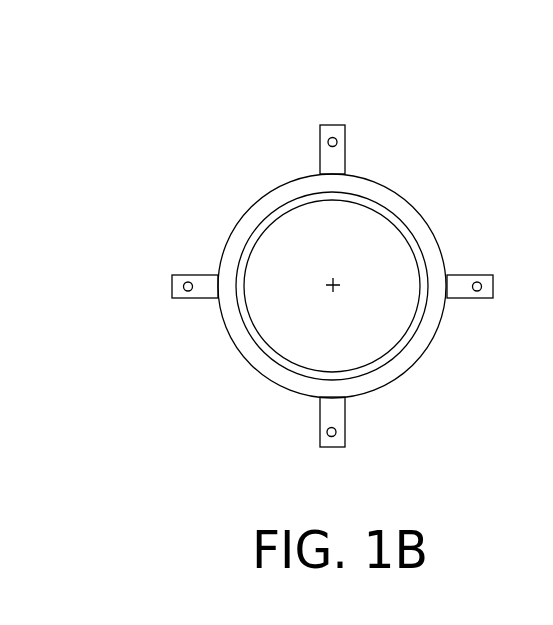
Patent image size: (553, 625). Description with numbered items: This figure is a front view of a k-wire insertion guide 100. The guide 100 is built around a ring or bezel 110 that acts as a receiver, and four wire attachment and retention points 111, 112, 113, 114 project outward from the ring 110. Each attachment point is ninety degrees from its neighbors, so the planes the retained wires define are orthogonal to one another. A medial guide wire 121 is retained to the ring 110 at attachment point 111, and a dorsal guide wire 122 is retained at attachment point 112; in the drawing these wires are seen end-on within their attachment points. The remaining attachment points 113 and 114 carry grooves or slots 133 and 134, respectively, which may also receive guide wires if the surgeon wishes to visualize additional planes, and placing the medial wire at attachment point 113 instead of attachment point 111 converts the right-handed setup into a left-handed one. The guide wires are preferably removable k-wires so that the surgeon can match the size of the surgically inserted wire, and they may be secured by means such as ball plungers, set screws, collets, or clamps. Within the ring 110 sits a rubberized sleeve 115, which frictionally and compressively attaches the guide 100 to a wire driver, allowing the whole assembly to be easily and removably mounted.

The k-wire insertion guide 100 is at (375, 91).
The ring 110 is at (280, 187).
The rubberized sleeve 115 is at (392, 207).
The attachment point 111 is at (346, 442).
The attachment point 112 is at (465, 275).
The attachment point 113 is at (320, 132).
The attachment point 114 is at (195, 298).
The medial guide wire 121 is at (327, 434).
The dorsal guide wire 122 is at (477, 292).
The groove/slot 133 is at (337, 143).
The groove/slot 134 is at (188, 281).